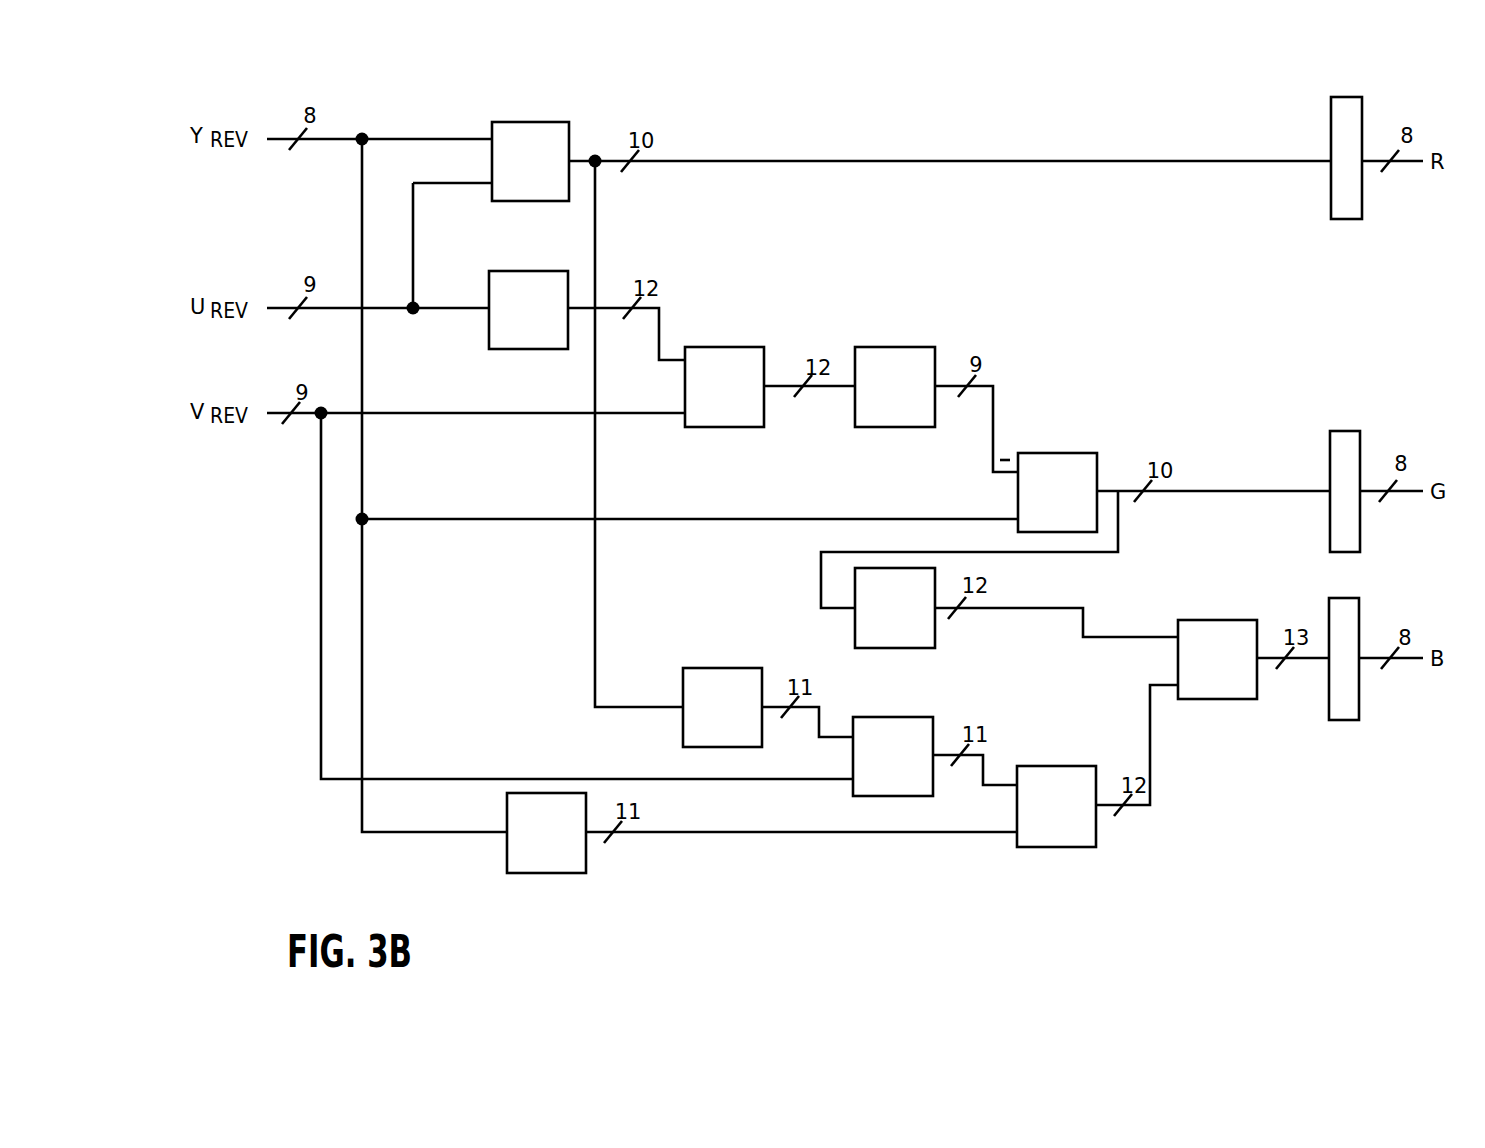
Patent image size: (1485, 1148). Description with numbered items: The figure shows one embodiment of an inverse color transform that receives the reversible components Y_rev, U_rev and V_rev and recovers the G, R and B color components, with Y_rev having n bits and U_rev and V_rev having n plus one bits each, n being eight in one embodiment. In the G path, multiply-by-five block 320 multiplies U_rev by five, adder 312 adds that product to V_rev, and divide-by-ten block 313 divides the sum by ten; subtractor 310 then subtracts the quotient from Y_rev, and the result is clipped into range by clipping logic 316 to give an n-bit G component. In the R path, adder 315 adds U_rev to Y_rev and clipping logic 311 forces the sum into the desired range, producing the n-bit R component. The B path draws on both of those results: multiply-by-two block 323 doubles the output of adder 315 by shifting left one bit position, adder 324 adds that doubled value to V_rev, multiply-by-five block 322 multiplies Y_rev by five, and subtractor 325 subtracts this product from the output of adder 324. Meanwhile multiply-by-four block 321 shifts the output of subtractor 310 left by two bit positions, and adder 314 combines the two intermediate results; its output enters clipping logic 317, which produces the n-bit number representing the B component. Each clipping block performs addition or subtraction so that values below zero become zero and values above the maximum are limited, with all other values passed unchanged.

The subtractor 310 is at (1055, 462).
The clipping logic 311 is at (1348, 219).
The adder 312 is at (723, 352).
The divide-by-ten block 313 is at (896, 352).
The adder 314 is at (1217, 628).
The adder 315 is at (536, 128).
The clipping logic 316 is at (1348, 552).
The clipping logic 317 is at (1345, 720).
The multiply-by-five block 320 is at (519, 349).
The multiply-by-four block 321 is at (907, 648).
The multiply-by-five block 322 is at (538, 873).
The multiply-by-two block 323 is at (722, 668).
The adder 324 is at (913, 722).
The subtractor 325 is at (1078, 770).